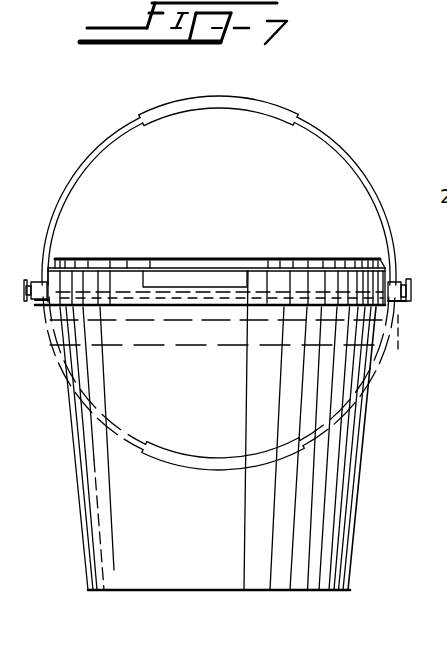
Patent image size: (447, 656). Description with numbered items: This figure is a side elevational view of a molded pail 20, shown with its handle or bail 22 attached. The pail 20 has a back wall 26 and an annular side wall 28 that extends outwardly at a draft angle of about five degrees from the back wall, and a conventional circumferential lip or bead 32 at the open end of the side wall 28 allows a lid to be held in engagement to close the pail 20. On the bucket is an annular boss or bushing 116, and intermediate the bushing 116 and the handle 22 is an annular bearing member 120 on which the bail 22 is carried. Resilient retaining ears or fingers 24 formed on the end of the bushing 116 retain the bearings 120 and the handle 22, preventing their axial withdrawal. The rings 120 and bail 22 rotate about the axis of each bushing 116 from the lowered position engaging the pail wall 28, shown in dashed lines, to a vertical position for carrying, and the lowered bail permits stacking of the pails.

The pail 20 is at (357, 522).
The bail 22 is at (248, 112).
The retaining ears 24 is at (412, 291).
The back wall 26 is at (225, 591).
The annular side wall 28 is at (363, 448).
The lip 32 is at (147, 256).
The bushing 116 is at (403, 302).
The bearing member 120 is at (397, 281).